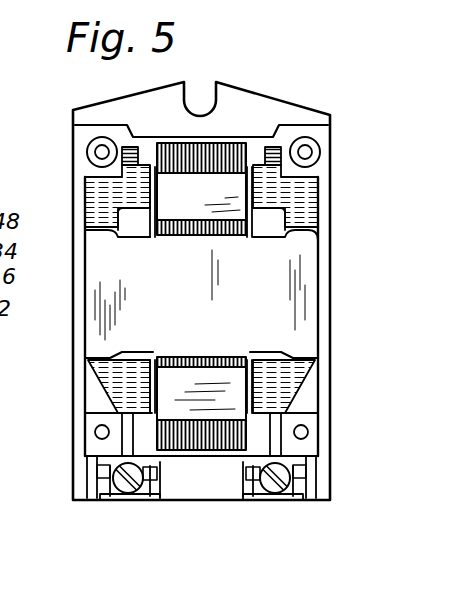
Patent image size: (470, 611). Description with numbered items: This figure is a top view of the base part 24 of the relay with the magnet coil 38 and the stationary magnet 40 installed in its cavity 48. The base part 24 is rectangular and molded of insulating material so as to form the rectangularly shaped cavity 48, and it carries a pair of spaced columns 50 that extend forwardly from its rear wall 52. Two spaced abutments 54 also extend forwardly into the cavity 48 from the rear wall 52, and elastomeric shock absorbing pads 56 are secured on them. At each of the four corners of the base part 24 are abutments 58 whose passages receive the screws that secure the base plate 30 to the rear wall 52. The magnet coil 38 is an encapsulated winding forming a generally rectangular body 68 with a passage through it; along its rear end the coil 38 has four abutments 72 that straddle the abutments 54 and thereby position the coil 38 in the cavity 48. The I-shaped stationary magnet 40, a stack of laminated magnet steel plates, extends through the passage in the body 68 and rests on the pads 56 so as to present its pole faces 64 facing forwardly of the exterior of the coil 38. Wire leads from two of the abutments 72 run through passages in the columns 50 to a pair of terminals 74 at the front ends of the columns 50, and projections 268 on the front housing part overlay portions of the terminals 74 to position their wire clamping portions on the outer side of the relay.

The base plate 30 is at (257, 108).
The base part 24 is at (330, 254).
The abutments 58 is at (88, 133).
The magnet pole faces 64 is at (222, 196).
The stationary magnet 40 is at (207, 216).
The abutments 54 is at (100, 189).
The cavity 48 is at (303, 206).
The elastomeric shock absorbing pads 56 is at (305, 178).
The coil abutments 72 is at (130, 218).
The magnet coil 38 is at (197, 290).
The coil body 68 is at (272, 290).
The rear wall 52 is at (310, 399).
The columns 50 is at (330, 462).
The terminals 74 is at (125, 498).
The projections 268 is at (88, 462).